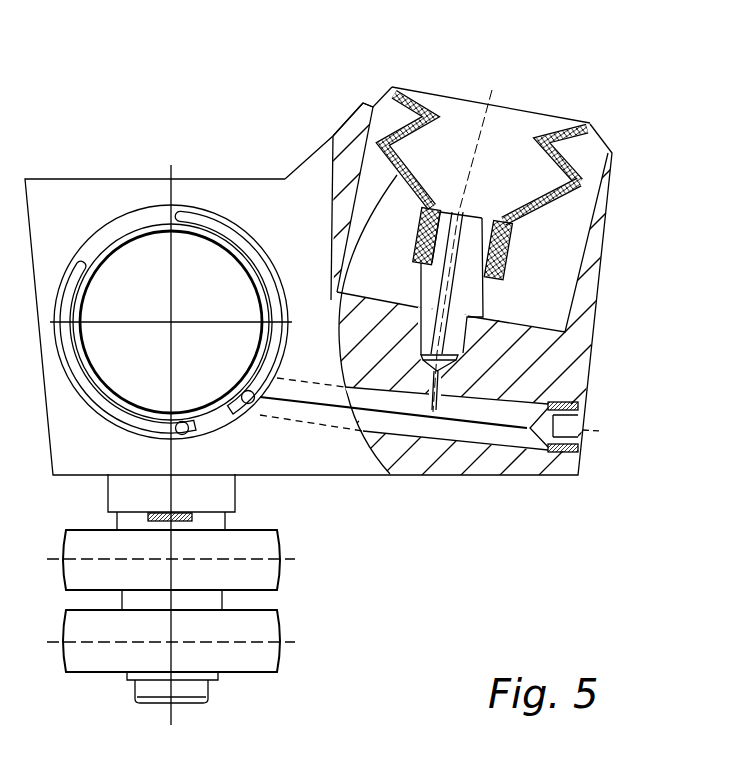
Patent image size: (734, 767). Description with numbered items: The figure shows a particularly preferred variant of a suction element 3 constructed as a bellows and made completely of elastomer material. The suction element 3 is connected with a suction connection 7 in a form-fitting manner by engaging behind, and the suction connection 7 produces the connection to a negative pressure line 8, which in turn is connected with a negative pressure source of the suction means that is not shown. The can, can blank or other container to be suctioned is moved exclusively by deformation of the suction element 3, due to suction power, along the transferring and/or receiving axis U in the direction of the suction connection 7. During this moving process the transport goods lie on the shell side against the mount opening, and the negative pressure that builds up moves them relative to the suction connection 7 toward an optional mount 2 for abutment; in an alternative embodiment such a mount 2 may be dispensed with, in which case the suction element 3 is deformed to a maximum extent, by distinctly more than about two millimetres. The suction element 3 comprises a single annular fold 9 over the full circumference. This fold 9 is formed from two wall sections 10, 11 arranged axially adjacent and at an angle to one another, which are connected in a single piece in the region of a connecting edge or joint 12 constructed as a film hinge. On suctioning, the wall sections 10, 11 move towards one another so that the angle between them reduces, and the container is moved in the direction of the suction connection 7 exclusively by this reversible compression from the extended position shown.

The mount 2 is at (377, 98).
The suction element 3 is at (562, 150).
The suction connection 7 is at (482, 247).
The negative pressure line 8 is at (410, 407).
The annular fold 9 is at (590, 203).
The wall section 10 is at (372, 136).
The wall section 11 is at (331, 300).
The joint 12 is at (588, 180).
The transferring and/or receiving axis U is at (493, 93).